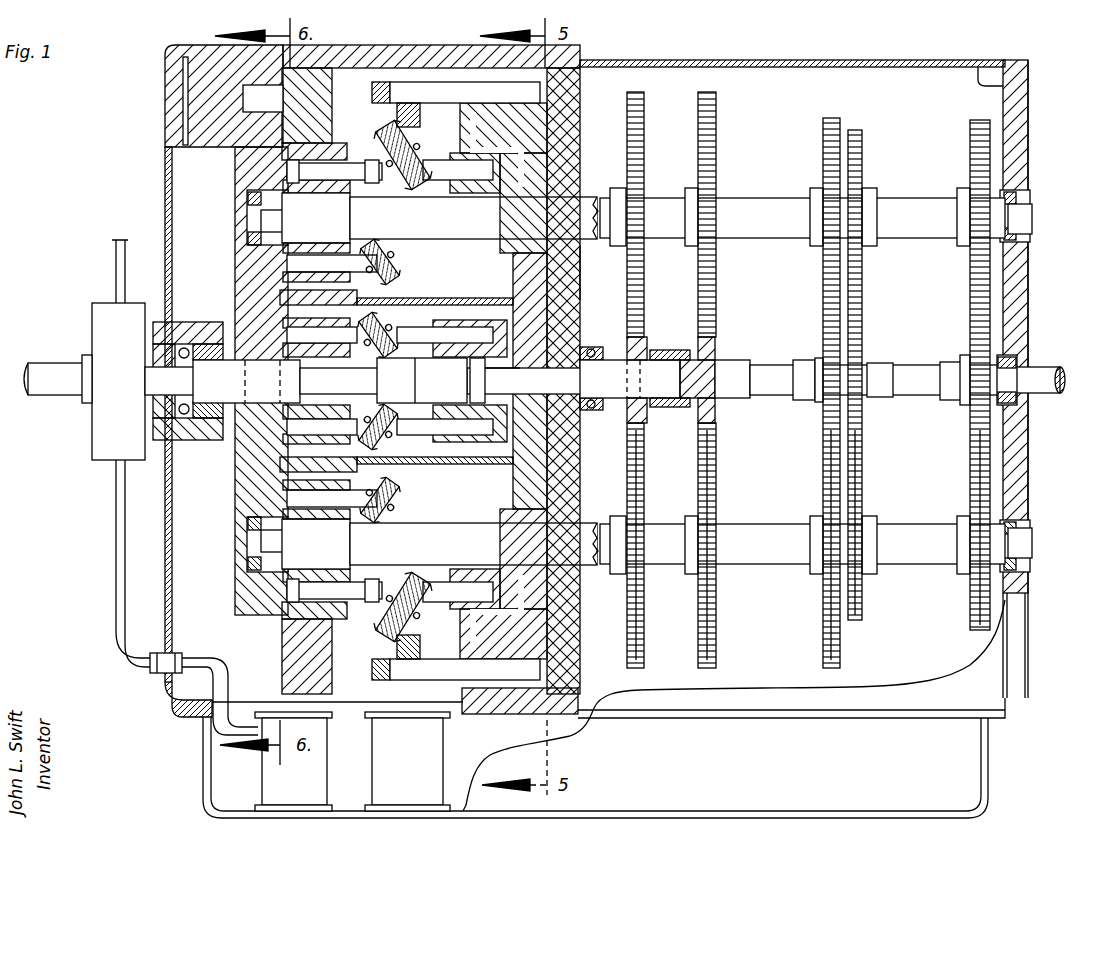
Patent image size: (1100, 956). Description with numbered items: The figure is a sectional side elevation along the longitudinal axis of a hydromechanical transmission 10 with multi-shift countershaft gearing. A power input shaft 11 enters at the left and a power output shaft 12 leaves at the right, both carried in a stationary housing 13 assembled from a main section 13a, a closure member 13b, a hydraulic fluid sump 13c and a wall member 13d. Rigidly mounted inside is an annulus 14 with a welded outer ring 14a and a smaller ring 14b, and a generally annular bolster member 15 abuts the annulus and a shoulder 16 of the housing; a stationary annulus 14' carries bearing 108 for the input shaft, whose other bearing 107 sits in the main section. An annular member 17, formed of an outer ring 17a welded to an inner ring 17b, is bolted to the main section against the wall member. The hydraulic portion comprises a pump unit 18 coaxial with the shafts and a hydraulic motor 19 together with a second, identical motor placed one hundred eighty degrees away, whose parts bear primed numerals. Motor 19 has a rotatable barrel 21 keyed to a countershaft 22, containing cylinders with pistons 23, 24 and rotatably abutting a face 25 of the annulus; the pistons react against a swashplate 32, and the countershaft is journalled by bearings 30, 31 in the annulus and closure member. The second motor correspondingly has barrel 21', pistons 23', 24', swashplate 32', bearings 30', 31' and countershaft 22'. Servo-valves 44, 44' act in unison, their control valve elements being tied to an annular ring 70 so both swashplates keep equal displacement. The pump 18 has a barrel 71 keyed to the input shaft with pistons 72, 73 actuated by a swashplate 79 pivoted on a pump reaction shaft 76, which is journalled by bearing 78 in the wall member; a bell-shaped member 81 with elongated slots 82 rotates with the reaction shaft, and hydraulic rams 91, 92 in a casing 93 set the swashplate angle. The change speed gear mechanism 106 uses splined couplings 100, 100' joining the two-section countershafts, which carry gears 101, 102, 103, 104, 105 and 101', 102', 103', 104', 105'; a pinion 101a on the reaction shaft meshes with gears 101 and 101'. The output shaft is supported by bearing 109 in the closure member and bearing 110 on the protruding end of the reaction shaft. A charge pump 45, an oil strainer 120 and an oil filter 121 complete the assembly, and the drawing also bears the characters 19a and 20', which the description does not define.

The hydromechanical transmission 10 is at (1038, 64).
The power input shaft 11 is at (46, 364).
The power output shaft 12 is at (762, 378).
The housing 13 is at (820, 58).
The main section 13a is at (664, 60).
The closure member 13b is at (1022, 156).
The hydraulic fluid sump 13c is at (206, 758).
The wall member 13d is at (566, 282).
The annulus 14 is at (219, 428).
The stationary annulus 14' is at (224, 290).
The outer ring 14a is at (250, 622).
The smaller ring 14b is at (244, 190).
The bolster member 15 is at (343, 158).
The shoulder 16 is at (296, 80).
The annular shaped member 17 is at (460, 112).
The outer ring 17a is at (562, 110).
The inner ring 17b is at (560, 152).
The pump unit 18 is at (436, 298).
The hydraulic motor 19 is at (359, 163).
The bearing boss 19a is at (300, 101).
The bearing pin 20' is at (330, 611).
The rotatable barrel 21 is at (361, 136).
The rotatable barrel 21' is at (320, 473).
The countershaft 22 is at (676, 193).
The countershaft 22' is at (676, 519).
The cylinder with piston 23 is at (369, 213).
The cylinder with piston 23' is at (376, 482).
The cylinder with piston 24 is at (314, 223).
The cylinder with piston 24' is at (311, 554).
The face of annulus 25 is at (336, 148).
The bearing 30 is at (223, 200).
The bearing 30' is at (216, 551).
The bearing 31 is at (1050, 183).
The bearing 31' is at (1049, 507).
The swashplate 32 is at (383, 127).
The swashplate 32' is at (439, 470).
The servo-valve 44 is at (464, 55).
The servo-valve 44' is at (515, 720).
The charge pump 45 is at (100, 320).
The annular ring 70 is at (374, 90).
The rotatable barrel 71 is at (306, 324).
The cylinder with piston 72 is at (330, 330).
The cylinder with piston 73 is at (344, 430).
The pump reaction shaft 76 is at (610, 404).
The bearing 78 is at (596, 344).
The swashplate 79 is at (386, 322).
The bell-shaped member 81 is at (477, 298).
The elongated slot 82 is at (380, 274).
The hydraulic ram 91 is at (428, 380).
The hydraulic ram 92 is at (470, 402).
The casing 93 is at (466, 446).
The splined coupling 100 is at (599, 169).
The splined coupling 100' is at (601, 503).
The gear 101 is at (656, 379).
The gear 101' is at (659, 545).
The pinion 101a is at (646, 338).
The gear 102 is at (731, 379).
The gear 102' is at (736, 545).
The gear 103 is at (795, 393).
The gear 103' is at (816, 553).
The gear 104 is at (869, 356).
The gear 104' is at (887, 530).
The gear 105 is at (946, 375).
The gear 105' is at (941, 546).
The change speed gear mechanism 106 is at (916, 130).
The bearing 107 is at (188, 428).
The bearing 108 is at (261, 326).
The bearing 109 is at (1012, 352).
The bearing 110 is at (672, 347).
The oil strainer 120 is at (407, 761).
The oil filter 121 is at (293, 761).